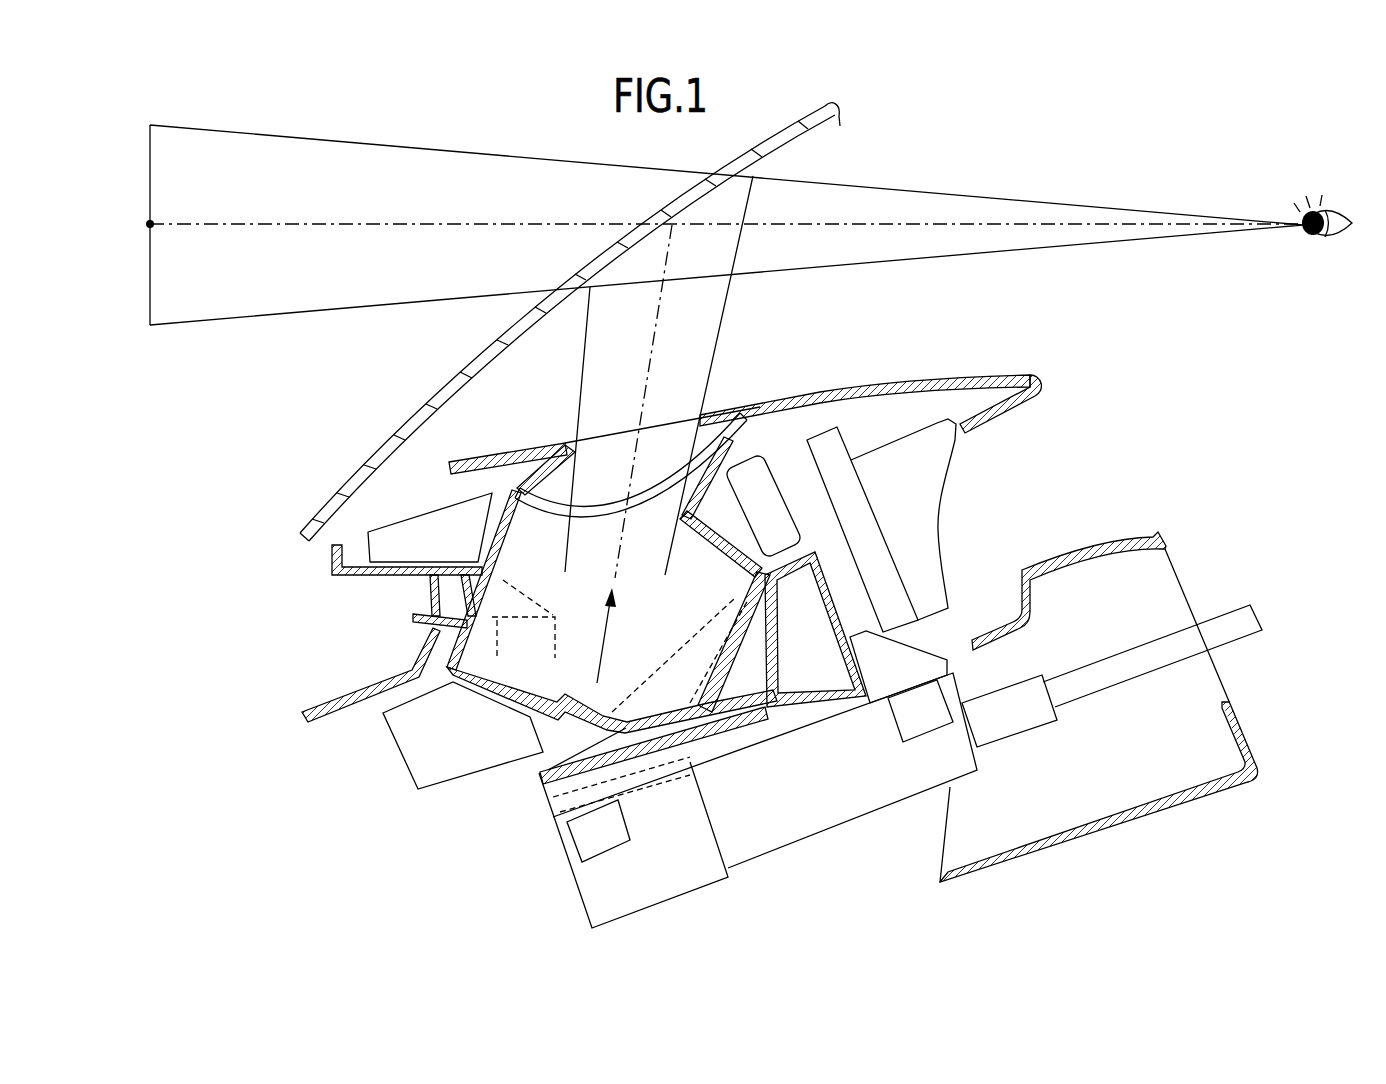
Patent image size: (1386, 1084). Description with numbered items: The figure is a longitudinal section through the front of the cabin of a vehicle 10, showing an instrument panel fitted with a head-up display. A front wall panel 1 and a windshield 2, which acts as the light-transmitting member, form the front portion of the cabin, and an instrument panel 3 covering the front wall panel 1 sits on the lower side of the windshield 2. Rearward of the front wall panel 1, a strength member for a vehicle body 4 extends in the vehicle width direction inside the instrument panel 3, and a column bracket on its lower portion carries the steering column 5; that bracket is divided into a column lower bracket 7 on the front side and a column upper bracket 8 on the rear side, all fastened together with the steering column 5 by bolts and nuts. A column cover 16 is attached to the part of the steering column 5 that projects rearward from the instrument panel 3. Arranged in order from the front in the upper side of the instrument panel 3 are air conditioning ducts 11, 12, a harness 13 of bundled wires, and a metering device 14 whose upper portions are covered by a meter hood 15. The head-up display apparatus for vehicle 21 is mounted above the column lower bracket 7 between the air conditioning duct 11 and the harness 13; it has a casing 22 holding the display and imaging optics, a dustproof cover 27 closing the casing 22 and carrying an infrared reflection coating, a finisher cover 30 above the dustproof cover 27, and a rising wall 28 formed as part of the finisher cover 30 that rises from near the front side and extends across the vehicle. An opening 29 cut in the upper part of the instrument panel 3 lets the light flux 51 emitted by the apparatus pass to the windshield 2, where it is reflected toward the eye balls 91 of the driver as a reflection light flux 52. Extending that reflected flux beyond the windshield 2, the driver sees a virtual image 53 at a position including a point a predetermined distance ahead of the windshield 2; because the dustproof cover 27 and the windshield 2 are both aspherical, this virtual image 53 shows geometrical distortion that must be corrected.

The front wall panel 1 is at (330, 697).
The windshield 2 is at (428, 392).
The instrument panel 3 is at (835, 388).
The strength member for a vehicle body 4 is at (813, 700).
The steering column 5 is at (688, 896).
The column lower bracket 7 is at (743, 683).
The column upper bracket 8 is at (880, 683).
The vehicle 10 is at (284, 459).
The air conditioning duct 11 is at (410, 538).
The air conditioning duct 12 is at (413, 757).
The harness 13 is at (762, 483).
The metering device 14 is at (940, 528).
The meter hood 15 is at (996, 375).
The column cover 16 is at (1183, 808).
The head-up display apparatus for vehicle 21 is at (611, 481).
The casing 22 is at (460, 648).
The dustproof cover 27 is at (664, 465).
The rising wall 28 is at (568, 483).
The opening 29 is at (712, 413).
The finisher cover 30 is at (530, 450).
The light flux 51 is at (727, 323).
The reflection light flux 52 is at (878, 186).
The virtual image 53 is at (724, 208).
The eye balls 91 is at (1342, 212).